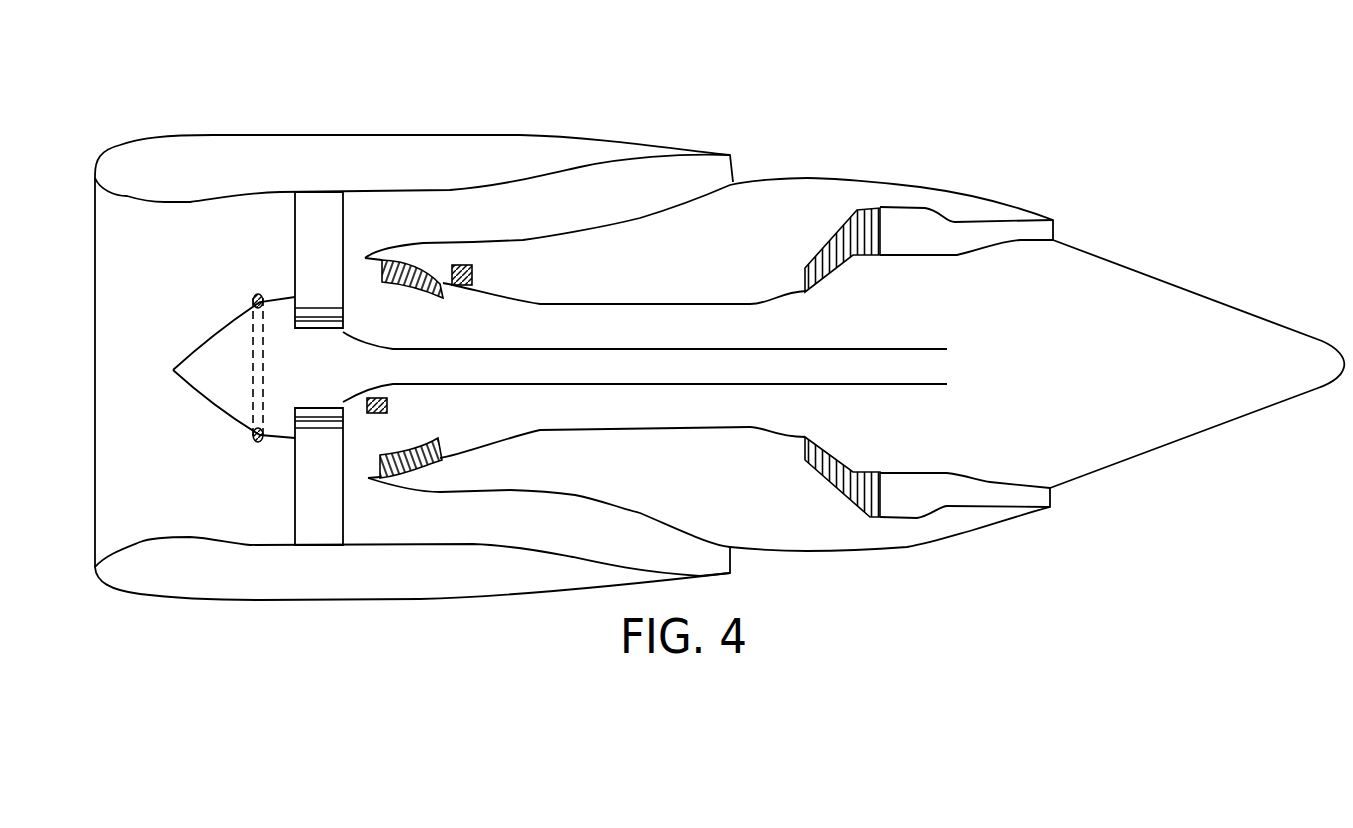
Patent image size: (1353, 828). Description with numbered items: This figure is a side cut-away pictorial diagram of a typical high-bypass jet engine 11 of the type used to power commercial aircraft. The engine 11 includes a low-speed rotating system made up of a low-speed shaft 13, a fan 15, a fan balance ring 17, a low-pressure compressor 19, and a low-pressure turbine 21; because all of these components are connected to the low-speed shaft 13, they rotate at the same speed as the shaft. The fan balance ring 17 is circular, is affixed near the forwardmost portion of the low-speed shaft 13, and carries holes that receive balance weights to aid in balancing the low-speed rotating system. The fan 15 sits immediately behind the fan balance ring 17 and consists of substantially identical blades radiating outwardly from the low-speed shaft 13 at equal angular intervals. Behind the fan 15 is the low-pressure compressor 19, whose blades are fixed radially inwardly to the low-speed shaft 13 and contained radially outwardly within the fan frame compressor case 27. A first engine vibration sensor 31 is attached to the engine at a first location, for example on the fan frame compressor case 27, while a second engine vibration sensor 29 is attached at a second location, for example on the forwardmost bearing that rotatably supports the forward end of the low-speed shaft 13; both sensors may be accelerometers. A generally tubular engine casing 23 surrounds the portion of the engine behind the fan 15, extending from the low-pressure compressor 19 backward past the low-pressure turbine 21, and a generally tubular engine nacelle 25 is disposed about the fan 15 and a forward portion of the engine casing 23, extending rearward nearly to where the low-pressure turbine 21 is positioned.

The high-bypass jet engine 11 is at (876, 108).
The low-speed shaft 13 is at (537, 383).
The fan 15 is at (285, 238).
The fan balance ring 17 is at (256, 301).
The low-pressure compressor 19 is at (403, 290).
The low-pressure turbine 21 is at (803, 290).
The engine casing 23 is at (643, 243).
The engine nacelle 25 is at (427, 148).
The fan frame compressor case 27 is at (414, 262).
The second engine vibration sensor 29 is at (388, 403).
The first engine vibration sensor 31 is at (462, 265).